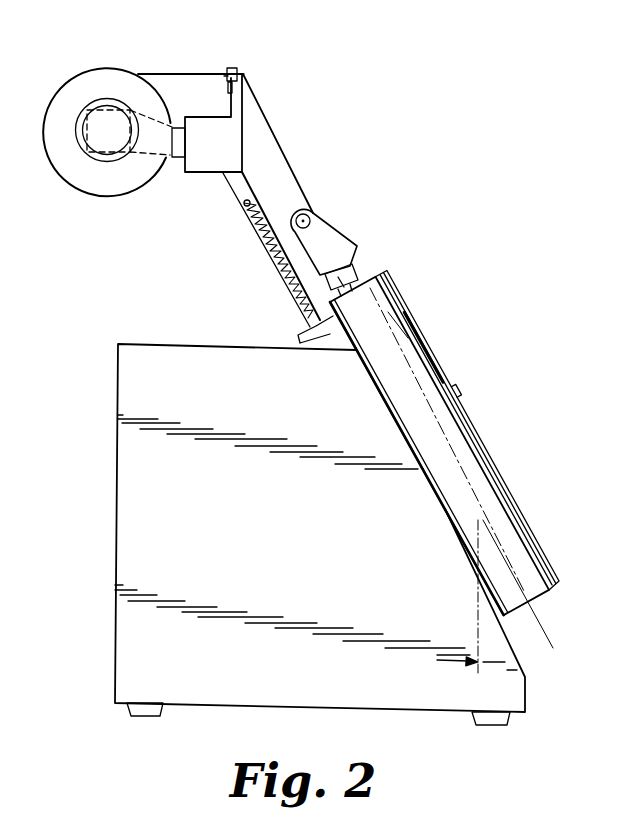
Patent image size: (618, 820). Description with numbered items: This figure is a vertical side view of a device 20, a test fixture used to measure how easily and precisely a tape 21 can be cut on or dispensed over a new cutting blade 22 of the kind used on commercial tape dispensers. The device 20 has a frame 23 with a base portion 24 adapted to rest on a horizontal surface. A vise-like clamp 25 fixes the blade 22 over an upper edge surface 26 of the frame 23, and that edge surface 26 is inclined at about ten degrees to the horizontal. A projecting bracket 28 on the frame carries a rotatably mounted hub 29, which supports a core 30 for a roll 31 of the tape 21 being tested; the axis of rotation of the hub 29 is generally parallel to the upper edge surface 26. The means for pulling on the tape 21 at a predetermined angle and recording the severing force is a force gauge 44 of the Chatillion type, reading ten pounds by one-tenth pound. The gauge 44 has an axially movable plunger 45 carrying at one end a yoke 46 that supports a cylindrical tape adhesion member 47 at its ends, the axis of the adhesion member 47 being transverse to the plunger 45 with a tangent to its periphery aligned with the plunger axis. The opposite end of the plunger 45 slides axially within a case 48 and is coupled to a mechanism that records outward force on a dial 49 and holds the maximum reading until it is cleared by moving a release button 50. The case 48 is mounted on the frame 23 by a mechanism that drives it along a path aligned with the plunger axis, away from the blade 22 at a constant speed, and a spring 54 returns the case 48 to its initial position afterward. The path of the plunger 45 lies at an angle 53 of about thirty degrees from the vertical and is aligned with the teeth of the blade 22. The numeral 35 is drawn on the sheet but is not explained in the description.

The device 20 is at (413, 251).
The tape 21 is at (292, 168).
The cutting blade 22 is at (228, 81).
The frame 23 is at (117, 462).
The base portion 24 is at (200, 708).
The vise-like clamp 25 is at (231, 68).
The upper edge surface 26 is at (246, 75).
The projecting bracket 28 is at (172, 158).
The hub 29 is at (100, 148).
The core 30 is at (97, 100).
The roll 31 is at (63, 94).
The washer 35 is at (226, 77).
The force gauge 44 is at (491, 470).
The plunger 45 is at (360, 276).
The yoke 46 is at (338, 237).
The tape adhesion member 47 is at (306, 219).
The case 48 is at (418, 438).
The dial 49 is at (436, 356).
The release button 50 is at (464, 395).
The angle 53 is at (582, 620).
The spring 54 is at (262, 238).